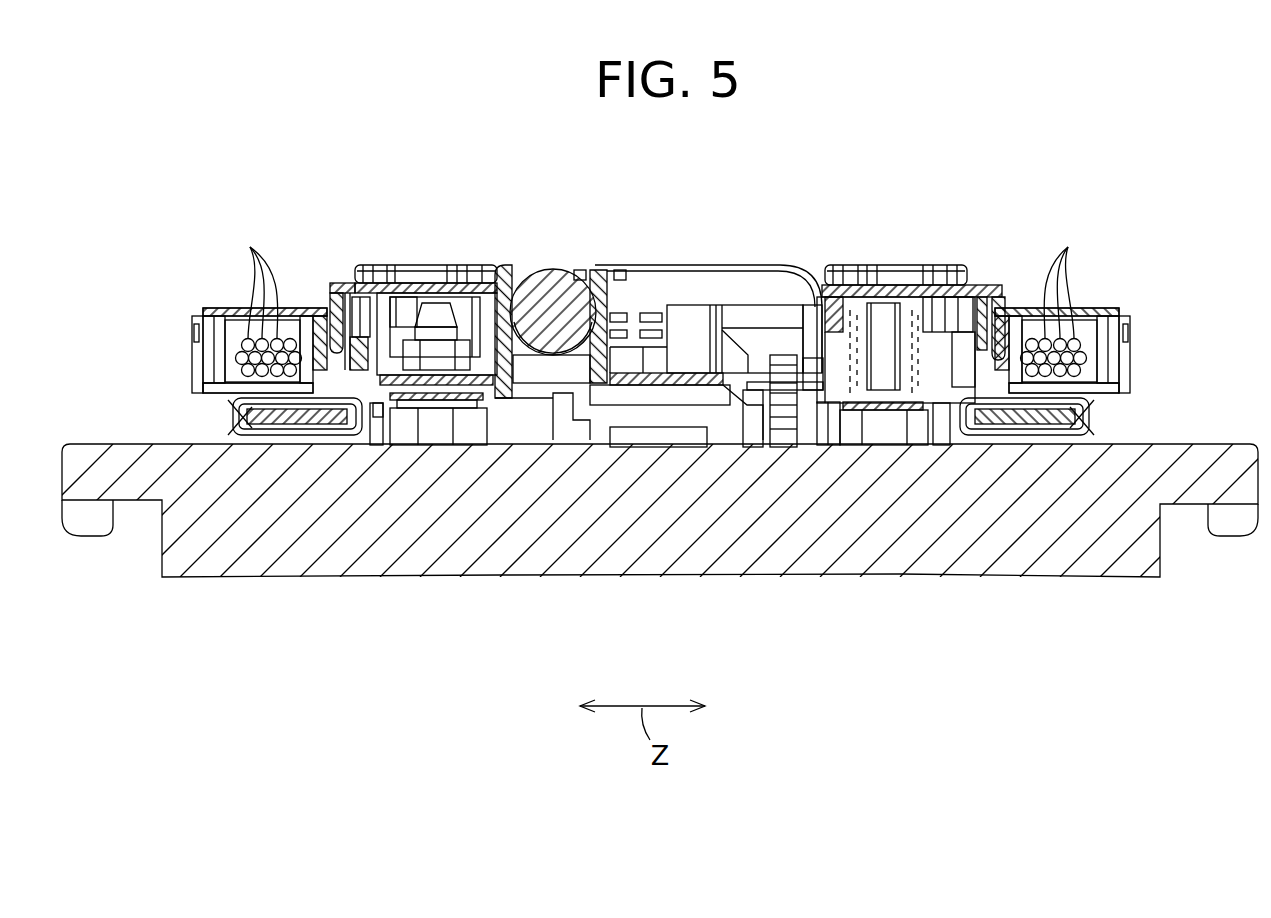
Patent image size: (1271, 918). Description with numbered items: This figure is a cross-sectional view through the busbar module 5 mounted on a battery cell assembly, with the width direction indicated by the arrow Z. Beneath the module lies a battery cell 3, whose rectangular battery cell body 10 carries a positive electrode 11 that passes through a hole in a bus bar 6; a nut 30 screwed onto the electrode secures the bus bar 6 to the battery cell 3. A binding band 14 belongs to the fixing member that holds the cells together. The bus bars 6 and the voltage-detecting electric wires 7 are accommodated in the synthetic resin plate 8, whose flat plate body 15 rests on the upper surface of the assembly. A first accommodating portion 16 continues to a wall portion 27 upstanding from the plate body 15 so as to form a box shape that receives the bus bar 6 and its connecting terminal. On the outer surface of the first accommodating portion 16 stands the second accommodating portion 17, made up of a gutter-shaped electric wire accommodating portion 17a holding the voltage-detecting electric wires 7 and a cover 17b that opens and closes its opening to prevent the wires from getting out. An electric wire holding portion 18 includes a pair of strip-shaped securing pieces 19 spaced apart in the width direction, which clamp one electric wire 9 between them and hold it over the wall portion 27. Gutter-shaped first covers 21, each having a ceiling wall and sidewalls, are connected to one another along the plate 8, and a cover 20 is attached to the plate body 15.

The battery cell 3 is at (160, 540).
The busbar module 5 is at (360, 248).
The bus bar 6 is at (440, 318).
The voltage-detecting electric wire 7 is at (660, 296).
The plate 8 is at (739, 298).
The electric wire 9 is at (548, 285).
The battery cell body 10 is at (209, 545).
The positive electrode 11 is at (460, 360).
The binding band 14 is at (305, 420).
The plate body 15 is at (627, 392).
The first accommodating portion 16 is at (345, 290).
The second accommodating portion 17 is at (212, 303).
The electric wire accommodating portion 17a is at (208, 342).
The cover 17b is at (232, 298).
The electric wire holding portion 18 is at (511, 258).
The securing piece 19 is at (578, 277).
The cover 20 is at (908, 260).
The first cover 21 is at (412, 320).
The wall portion 27 is at (541, 378).
The nut 30 is at (430, 305).